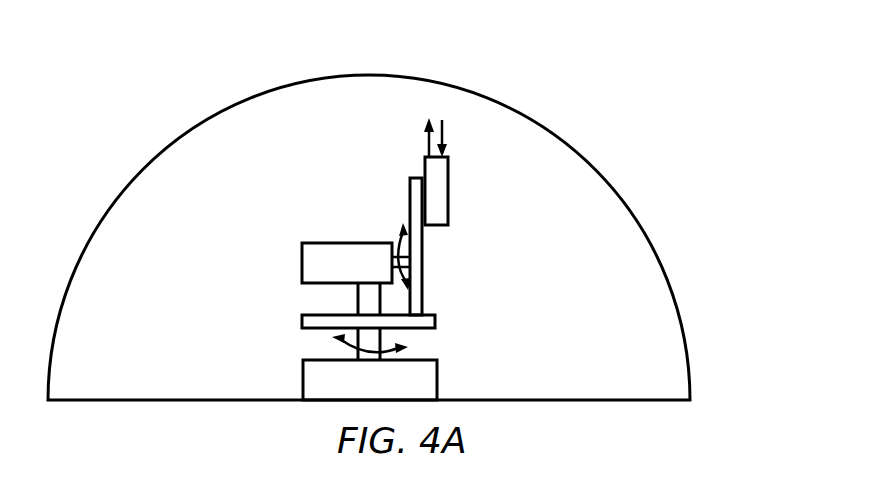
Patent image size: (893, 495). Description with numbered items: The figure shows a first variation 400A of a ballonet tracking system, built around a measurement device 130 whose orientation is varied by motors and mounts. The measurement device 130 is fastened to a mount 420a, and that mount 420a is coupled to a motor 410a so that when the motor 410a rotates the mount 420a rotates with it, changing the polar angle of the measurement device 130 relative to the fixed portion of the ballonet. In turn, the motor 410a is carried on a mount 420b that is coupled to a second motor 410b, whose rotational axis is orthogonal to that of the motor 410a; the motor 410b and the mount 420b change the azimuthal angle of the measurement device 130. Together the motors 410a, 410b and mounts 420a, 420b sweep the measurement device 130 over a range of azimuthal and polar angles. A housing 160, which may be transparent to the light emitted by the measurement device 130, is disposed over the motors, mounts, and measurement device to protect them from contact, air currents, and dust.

The first variation of ballonet tracking system 400A is at (558, 84).
The housing 160 is at (677, 302).
The measurement device 130 is at (448, 182).
The mount 420a is at (423, 237).
The mount 420b is at (435, 322).
The motor 410a is at (302, 256).
The motor 410b is at (303, 377).